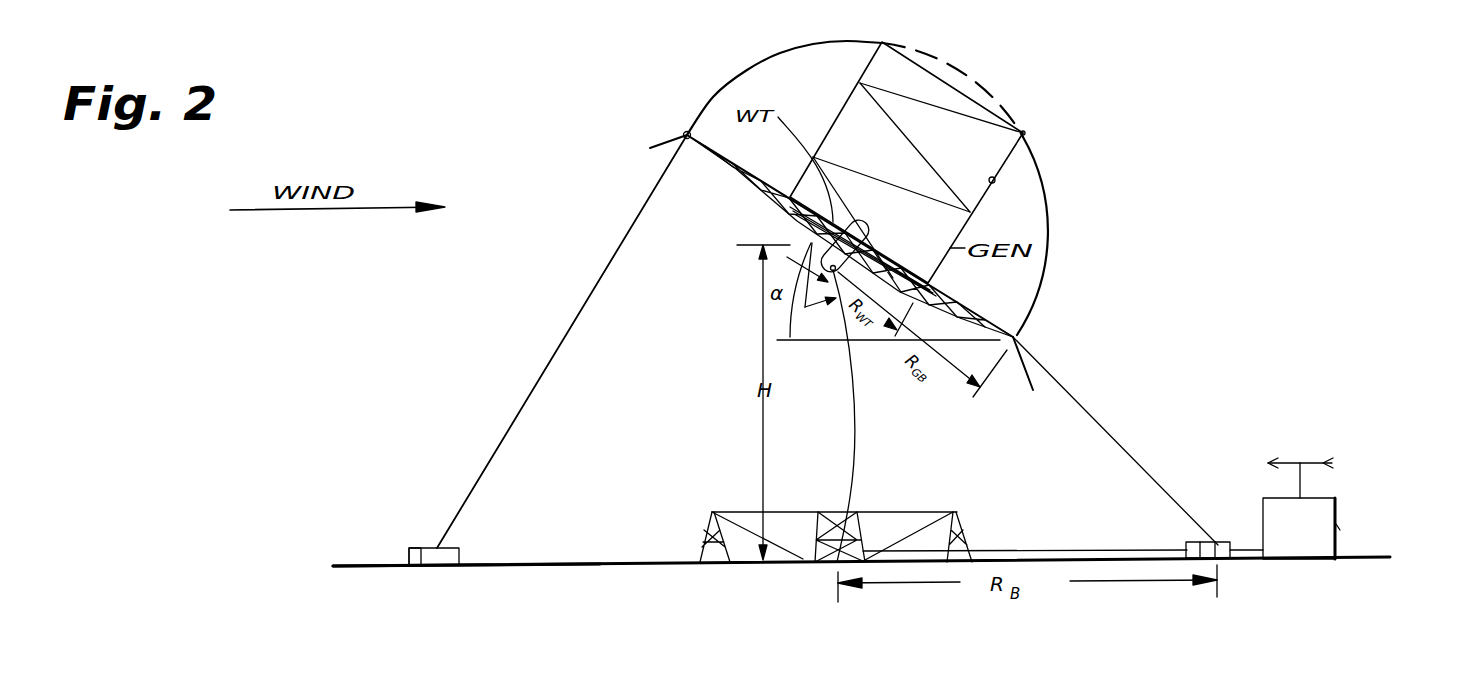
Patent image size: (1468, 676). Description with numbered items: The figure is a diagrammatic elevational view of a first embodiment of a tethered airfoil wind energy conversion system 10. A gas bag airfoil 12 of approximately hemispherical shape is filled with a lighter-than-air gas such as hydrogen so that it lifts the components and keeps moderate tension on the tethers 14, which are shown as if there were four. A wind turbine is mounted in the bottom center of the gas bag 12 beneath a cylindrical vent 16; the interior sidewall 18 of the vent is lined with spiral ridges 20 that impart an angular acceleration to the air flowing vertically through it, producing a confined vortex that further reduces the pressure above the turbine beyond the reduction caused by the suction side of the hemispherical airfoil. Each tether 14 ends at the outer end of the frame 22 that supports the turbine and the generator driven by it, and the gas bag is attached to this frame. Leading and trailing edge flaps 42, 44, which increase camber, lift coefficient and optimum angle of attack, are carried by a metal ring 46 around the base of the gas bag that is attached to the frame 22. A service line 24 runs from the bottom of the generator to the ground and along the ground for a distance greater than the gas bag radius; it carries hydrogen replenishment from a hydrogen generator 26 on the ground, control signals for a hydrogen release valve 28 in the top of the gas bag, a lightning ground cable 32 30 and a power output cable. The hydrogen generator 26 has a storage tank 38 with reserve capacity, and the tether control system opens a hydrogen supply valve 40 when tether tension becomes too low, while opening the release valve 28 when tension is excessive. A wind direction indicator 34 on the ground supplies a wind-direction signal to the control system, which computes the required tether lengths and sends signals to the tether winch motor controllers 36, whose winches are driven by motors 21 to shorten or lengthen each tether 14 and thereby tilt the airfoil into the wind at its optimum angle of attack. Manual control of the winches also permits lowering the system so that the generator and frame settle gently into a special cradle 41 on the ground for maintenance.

The tethered airfoil wind energy conversion system 10 is at (456, 130).
The gas bag airfoil 12 is at (1040, 145).
The tethers 14 is at (1070, 352).
The cylindrical vent 16 is at (926, 46).
The interior sidewall 18 is at (996, 182).
The spiral ridges 20 is at (950, 110).
The motors 21 is at (430, 548).
The frame 22 is at (965, 305).
The service line 24 is at (1048, 416).
The hydrogen generator 26 is at (1333, 493).
The hydrogen release valve 28 is at (1023, 133).
The lightning ground cable 30 is at (1048, 416).
The lightning ground cable 32 is at (862, 455).
The wind direction indicator 34 is at (1262, 463).
The tether winch motor controllers 36 is at (409, 557).
The storage tank 38 is at (1378, 519).
The hydrogen supply valve 40 is at (1338, 527).
The cradle 41 is at (872, 512).
The leading edge flap 42 is at (672, 143).
The trailing edge flap 44 is at (1032, 378).
The metal ring 46 is at (688, 133).